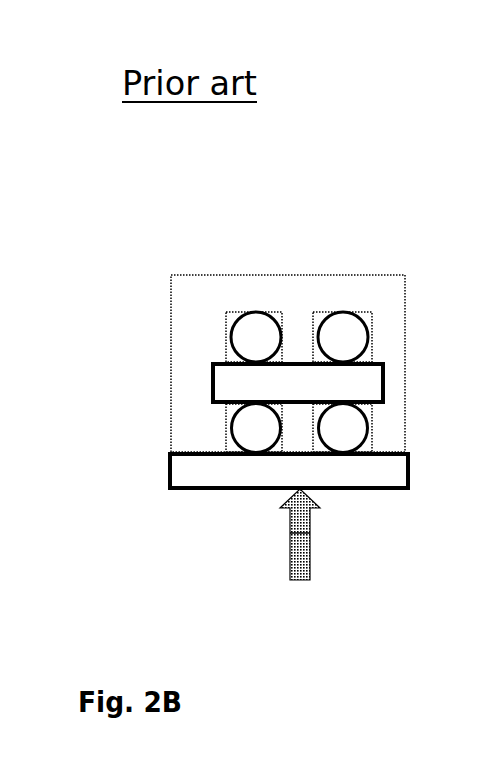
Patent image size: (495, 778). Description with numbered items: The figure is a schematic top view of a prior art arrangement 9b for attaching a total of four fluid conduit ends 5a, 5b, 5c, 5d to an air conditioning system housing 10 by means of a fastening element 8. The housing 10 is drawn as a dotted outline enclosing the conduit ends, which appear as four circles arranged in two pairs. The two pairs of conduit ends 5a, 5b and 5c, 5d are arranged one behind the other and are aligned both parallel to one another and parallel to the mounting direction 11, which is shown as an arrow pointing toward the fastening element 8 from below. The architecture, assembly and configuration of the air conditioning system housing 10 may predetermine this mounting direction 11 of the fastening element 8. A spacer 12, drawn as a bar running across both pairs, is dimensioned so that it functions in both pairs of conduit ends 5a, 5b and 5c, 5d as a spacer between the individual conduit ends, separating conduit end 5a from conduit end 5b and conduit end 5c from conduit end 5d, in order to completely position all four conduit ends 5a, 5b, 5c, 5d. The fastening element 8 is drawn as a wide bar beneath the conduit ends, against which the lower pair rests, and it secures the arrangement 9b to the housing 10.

The arrangement 9b is at (278, 387).
The air conditioning system housing 10 is at (303, 295).
The fluid conduit end 5a is at (232, 425).
The fluid conduit end 5b is at (238, 323).
The fluid conduit end 5c is at (356, 419).
The fluid conduit end 5d is at (354, 327).
The spacer 12 is at (227, 383).
The fastening element 8 is at (227, 467).
The mounting direction 11 is at (287, 560).